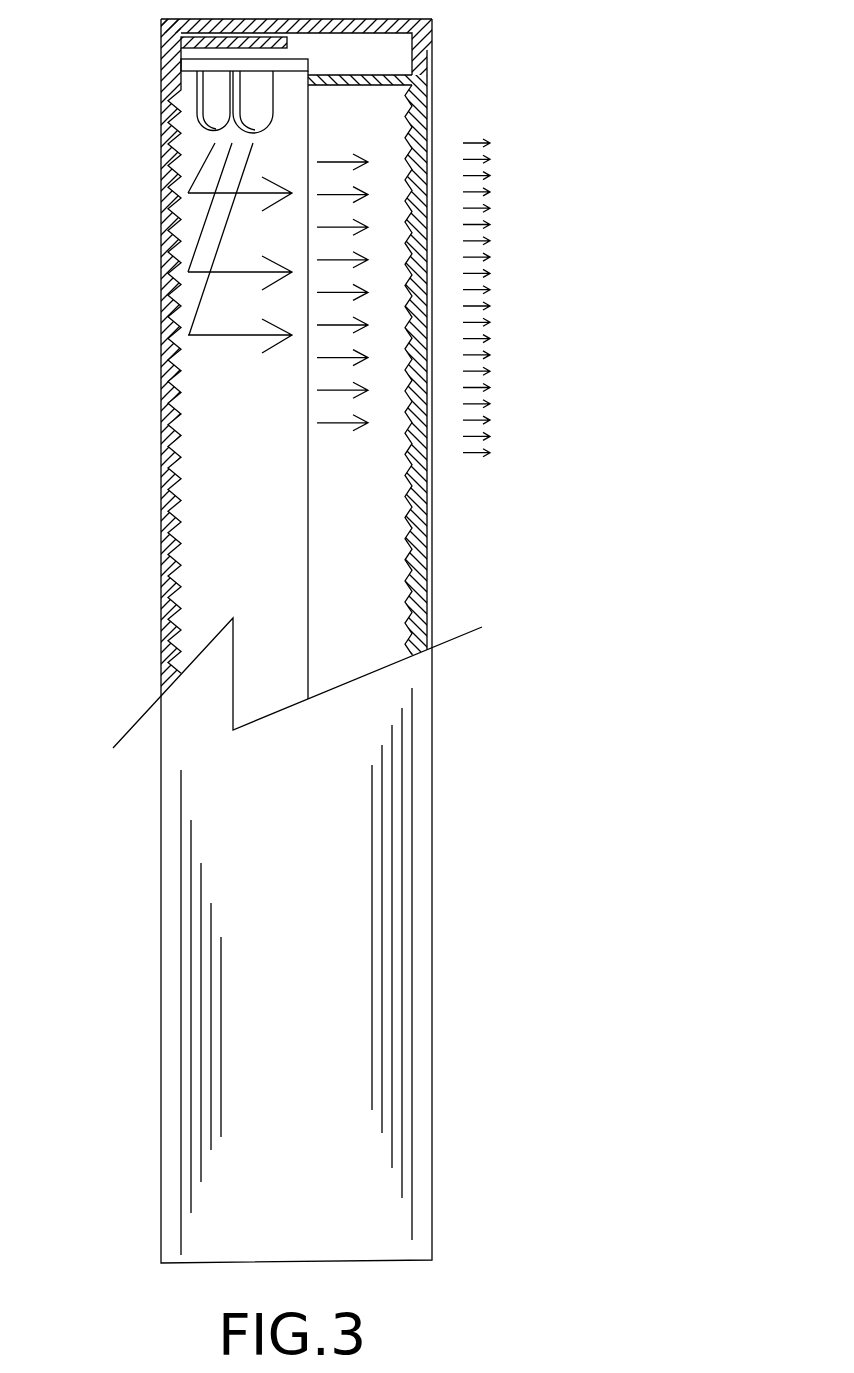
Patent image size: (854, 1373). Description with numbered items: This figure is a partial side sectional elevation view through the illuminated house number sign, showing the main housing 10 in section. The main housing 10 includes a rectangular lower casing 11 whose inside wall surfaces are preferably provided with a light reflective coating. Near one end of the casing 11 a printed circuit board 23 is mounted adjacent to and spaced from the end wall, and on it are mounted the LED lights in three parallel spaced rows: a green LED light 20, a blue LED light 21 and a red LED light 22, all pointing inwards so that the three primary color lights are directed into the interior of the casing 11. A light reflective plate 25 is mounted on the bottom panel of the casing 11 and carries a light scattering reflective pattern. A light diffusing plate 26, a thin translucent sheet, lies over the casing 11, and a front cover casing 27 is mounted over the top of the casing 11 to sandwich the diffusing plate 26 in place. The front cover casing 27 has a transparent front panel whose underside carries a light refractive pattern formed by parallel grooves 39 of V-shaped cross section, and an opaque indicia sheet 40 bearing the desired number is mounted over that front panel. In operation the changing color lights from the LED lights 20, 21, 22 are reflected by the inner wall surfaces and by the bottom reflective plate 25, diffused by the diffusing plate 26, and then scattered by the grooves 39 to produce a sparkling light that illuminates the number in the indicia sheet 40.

The main housing 10 is at (170, 828).
The lower casing 11 is at (162, 242).
The LED light 20 is at (257, 105).
The LED light 21 is at (215, 100).
The LED light 22 is at (230, 130).
The printed circuit board 23 is at (187, 40).
The light reflective plate 25 is at (177, 472).
The light diffusing plate 26 is at (302, 538).
The front cover casing 27 is at (430, 27).
The parallel grooves 39 is at (407, 528).
The opaque indicia sheet 40 is at (428, 93).